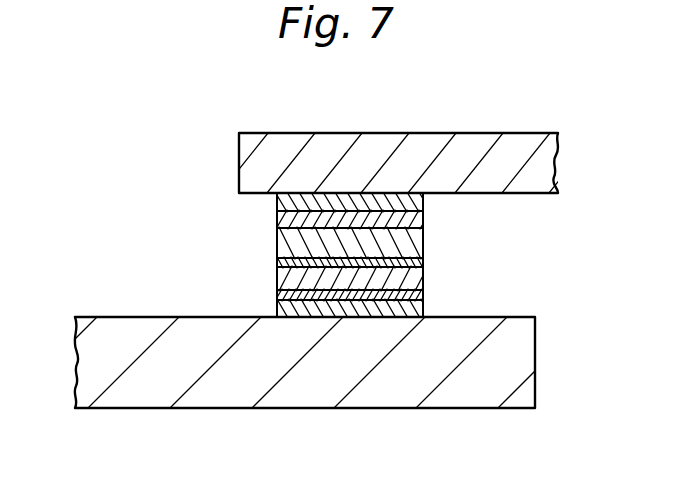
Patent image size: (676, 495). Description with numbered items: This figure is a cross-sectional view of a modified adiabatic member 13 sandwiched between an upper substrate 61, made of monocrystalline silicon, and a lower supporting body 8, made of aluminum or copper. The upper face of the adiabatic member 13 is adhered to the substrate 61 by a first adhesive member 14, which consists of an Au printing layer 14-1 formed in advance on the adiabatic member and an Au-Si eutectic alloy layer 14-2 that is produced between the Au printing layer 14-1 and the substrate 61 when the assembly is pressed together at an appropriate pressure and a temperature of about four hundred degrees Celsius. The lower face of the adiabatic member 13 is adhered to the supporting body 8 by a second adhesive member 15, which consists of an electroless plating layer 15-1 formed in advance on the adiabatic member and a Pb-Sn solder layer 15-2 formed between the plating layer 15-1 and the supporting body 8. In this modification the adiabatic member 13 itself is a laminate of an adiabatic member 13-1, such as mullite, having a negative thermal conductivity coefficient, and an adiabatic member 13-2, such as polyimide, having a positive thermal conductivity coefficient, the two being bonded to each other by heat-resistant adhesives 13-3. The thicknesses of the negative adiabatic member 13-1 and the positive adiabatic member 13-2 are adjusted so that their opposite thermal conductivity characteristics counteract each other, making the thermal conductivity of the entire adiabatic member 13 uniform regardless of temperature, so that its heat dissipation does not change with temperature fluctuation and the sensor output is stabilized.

The substrate 61 is at (392, 133).
The substrate 8 is at (535, 360).
The adiabatic member 13 is at (310, 263).
The adiabatic member 13-1 is at (277, 243).
The adiabatic member 13-2 is at (334, 286).
The heat-resistant adhesives 13-3 is at (277, 262).
The first adhesive member 14 is at (397, 218).
The Au printing layer 14-1 is at (423, 218).
The Au-Si eutectic alloy layer 14-2 is at (423, 200).
The second adhesive member 15 is at (398, 291).
The electroless plating layer 15-1 is at (423, 298).
The Pb-Sn solder layer 15-2 is at (423, 310).